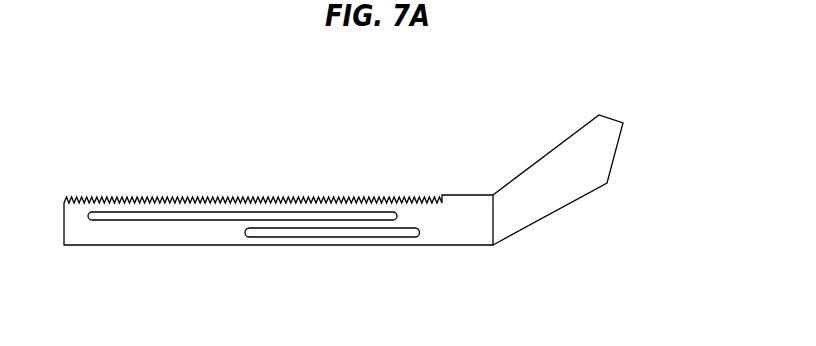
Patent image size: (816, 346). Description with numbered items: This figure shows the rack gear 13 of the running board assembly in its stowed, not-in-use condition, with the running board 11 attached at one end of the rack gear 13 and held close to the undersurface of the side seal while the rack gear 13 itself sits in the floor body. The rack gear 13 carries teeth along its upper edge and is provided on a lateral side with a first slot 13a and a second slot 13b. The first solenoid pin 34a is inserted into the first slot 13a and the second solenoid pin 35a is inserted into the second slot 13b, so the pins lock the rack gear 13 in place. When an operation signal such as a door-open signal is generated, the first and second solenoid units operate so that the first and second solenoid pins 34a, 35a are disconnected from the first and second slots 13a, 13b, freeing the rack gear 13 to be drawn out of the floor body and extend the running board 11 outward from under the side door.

The running board 11 is at (603, 157).
The rack gear 13 is at (173, 198).
The first slot 13a is at (140, 213).
The second slot 13b is at (322, 235).
The first solenoid pin 34a is at (388, 216).
The second solenoid pin 35a is at (408, 233).